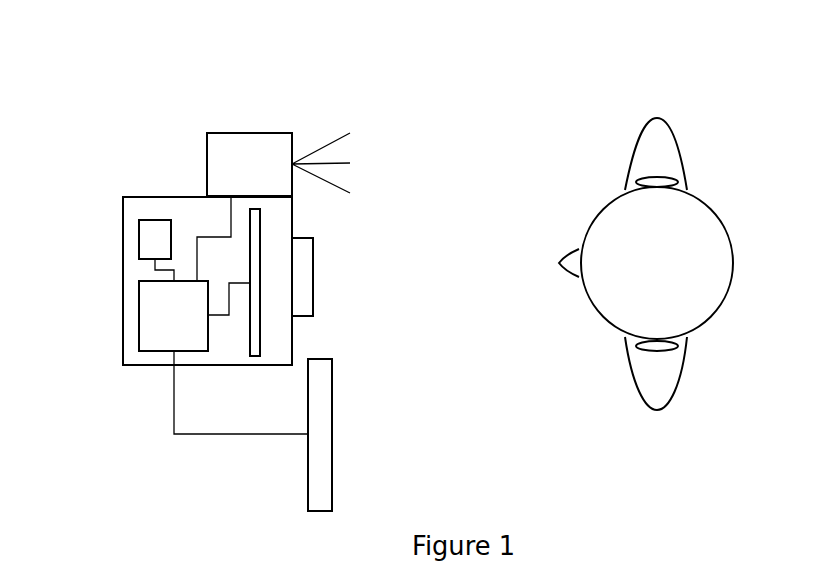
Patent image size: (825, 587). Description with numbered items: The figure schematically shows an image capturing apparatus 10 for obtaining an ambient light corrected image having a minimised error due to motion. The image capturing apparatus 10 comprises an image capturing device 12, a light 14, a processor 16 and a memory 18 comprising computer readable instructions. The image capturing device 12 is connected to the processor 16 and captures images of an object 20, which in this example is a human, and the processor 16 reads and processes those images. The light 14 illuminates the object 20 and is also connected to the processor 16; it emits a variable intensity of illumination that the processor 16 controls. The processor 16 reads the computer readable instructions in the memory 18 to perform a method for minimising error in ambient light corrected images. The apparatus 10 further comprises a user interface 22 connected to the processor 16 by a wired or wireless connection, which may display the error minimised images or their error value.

The image capturing apparatus 10 is at (150, 112).
The image capturing device 12 is at (259, 337).
The light 14 is at (266, 163).
The processor 16 is at (150, 337).
The memory 18 is at (138, 240).
The object 20 is at (705, 253).
The user interface 22 is at (312, 473).